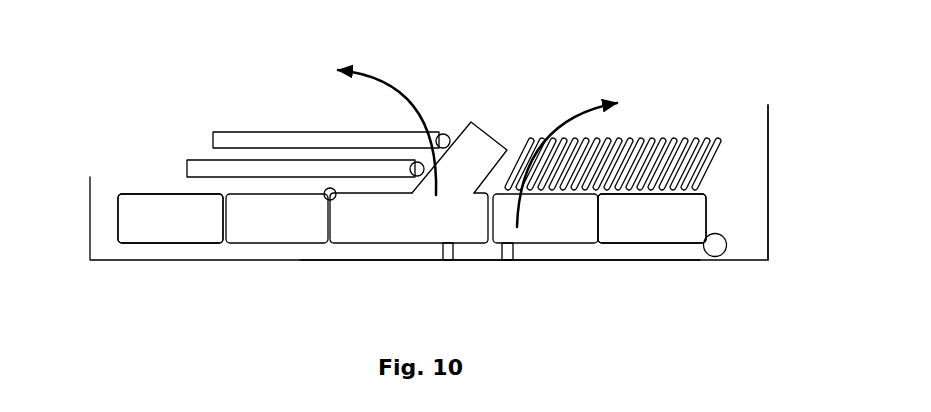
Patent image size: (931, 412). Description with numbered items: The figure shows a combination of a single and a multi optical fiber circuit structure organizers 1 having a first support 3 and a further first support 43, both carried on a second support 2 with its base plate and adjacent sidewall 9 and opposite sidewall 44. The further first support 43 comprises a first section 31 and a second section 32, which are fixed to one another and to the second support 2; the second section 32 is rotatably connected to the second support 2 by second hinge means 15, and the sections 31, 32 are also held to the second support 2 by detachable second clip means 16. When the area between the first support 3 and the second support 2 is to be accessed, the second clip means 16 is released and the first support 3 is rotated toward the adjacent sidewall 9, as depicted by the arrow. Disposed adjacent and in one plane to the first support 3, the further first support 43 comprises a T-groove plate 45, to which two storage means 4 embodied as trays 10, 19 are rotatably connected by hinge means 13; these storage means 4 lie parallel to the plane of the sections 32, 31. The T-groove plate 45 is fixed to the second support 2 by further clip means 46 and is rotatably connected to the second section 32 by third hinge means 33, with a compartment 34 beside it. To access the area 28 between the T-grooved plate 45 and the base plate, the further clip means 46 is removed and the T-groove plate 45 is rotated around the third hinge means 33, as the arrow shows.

The optical fiber circuit structure organizers 1 is at (580, 60).
The second support 2 is at (533, 263).
The first support 3 is at (117, 222).
The storage means 4 is at (290, 88).
The sidewall 9 is at (770, 148).
The tray 10 is at (230, 130).
The pivot joint 13 is at (415, 160).
The second hinge means 15 is at (732, 245).
The second clip means 16 is at (500, 252).
The tray 19 is at (187, 170).
The area 28 is at (367, 252).
The first section 31 is at (570, 220).
The second section 32 is at (253, 222).
The third hinge means 33 is at (324, 198).
The compartment 34 is at (157, 223).
The further first support 43 is at (723, 213).
The side wall 44 is at (90, 190).
The T-groove plate 45 is at (475, 142).
The further clip means 46 is at (440, 252).